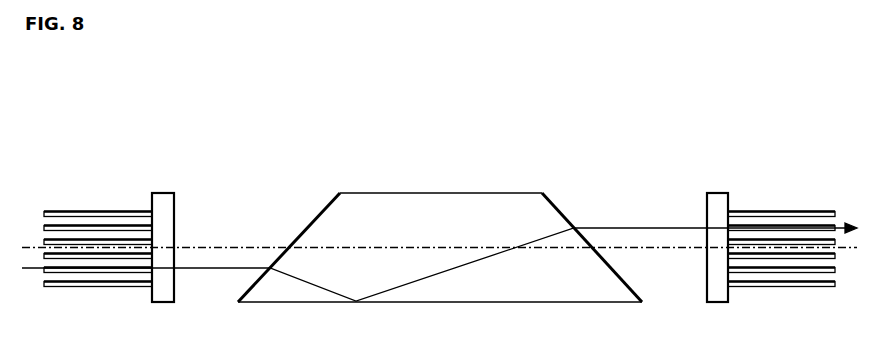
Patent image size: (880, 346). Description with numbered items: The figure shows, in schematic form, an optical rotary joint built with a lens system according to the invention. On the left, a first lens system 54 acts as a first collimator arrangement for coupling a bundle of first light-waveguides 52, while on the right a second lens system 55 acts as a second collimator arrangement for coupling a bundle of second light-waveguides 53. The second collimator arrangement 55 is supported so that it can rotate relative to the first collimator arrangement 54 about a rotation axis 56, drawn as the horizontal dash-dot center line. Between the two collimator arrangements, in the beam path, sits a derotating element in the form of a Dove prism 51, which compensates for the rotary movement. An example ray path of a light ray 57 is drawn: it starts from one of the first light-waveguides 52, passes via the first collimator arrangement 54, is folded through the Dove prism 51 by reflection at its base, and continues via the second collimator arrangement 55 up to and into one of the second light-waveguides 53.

The Dove prism 51 is at (487, 200).
The first light-waveguides 52 is at (118, 216).
The second light-waveguides 53 is at (780, 208).
The first lens system 54 is at (160, 208).
The second lens system 55 is at (722, 202).
The rotation axis 56 is at (340, 248).
The light ray 57 is at (477, 265).